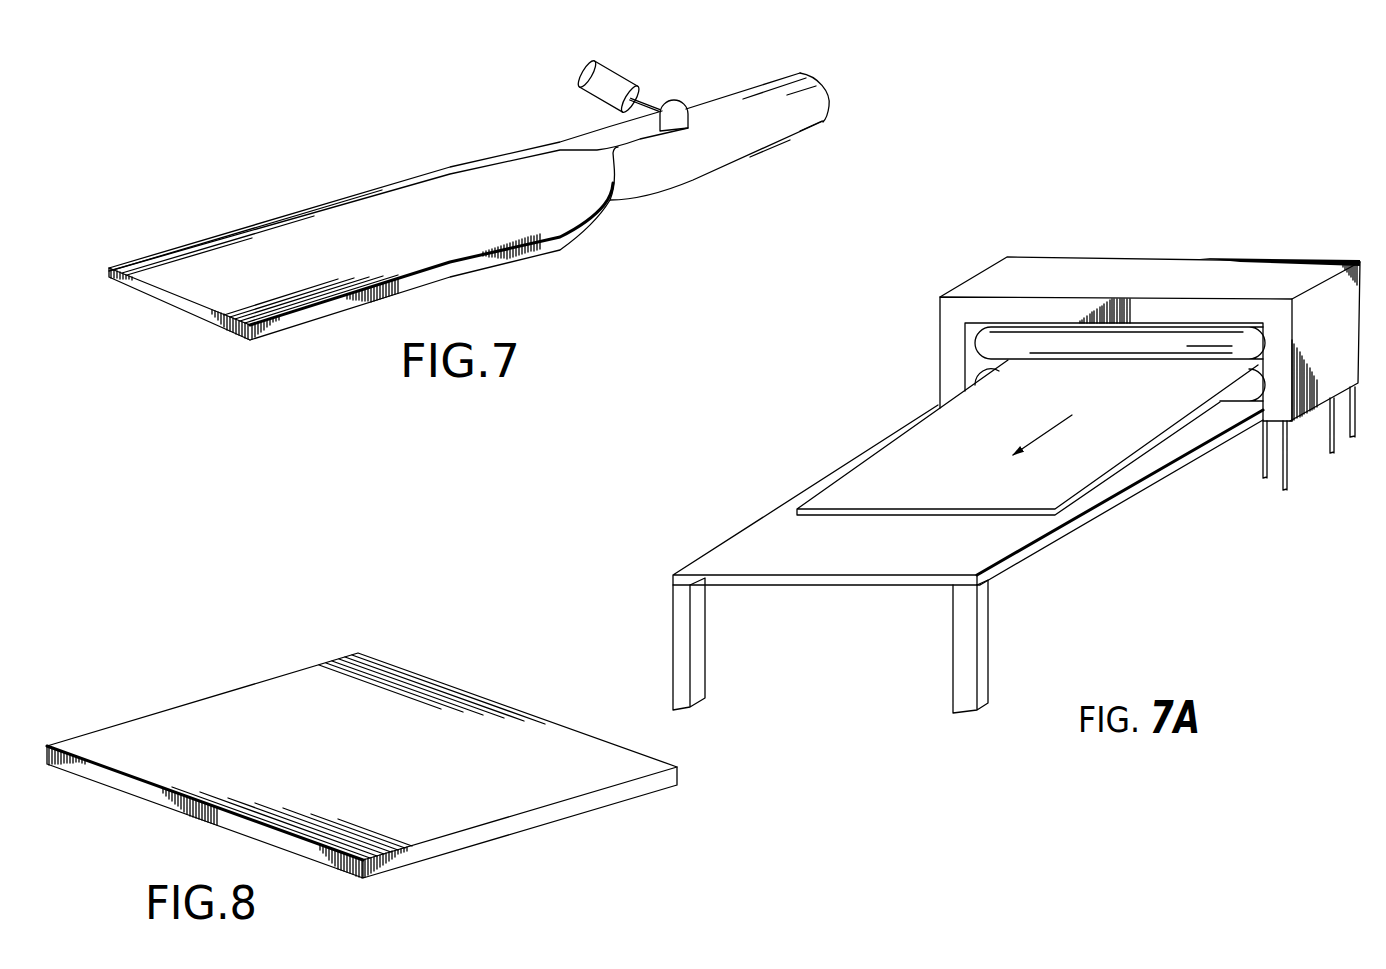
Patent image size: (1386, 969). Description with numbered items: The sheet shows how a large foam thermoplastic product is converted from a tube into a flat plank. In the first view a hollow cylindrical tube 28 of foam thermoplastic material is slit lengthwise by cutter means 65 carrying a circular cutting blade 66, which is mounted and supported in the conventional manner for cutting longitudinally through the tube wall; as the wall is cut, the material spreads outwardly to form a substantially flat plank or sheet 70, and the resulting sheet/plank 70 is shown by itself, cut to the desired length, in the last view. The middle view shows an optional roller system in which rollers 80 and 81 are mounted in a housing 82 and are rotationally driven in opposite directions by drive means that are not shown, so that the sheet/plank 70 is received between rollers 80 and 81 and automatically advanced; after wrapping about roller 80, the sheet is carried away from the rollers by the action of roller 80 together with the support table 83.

In FIG. 7, the hollow cylindrical tube 28 is at (781, 140).
In FIG. 7, the cutter means 65 is at (603, 88).
In FIG. 7, the circular cutting blade 66 is at (667, 106).
In FIG. 7, the sheet/plank 70 is at (262, 233).
In FIG. 7A, the sheet/plank 70 is at (907, 462).
In FIG. 8, the sheet/plank 70 is at (519, 725).
In FIG. 7A, the roller 80 is at (978, 376).
In FIG. 7A, the roller 81 is at (993, 340).
In FIG. 7A, the housing 82 is at (1052, 272).
In FIG. 7A, the support table 83 is at (1017, 538).